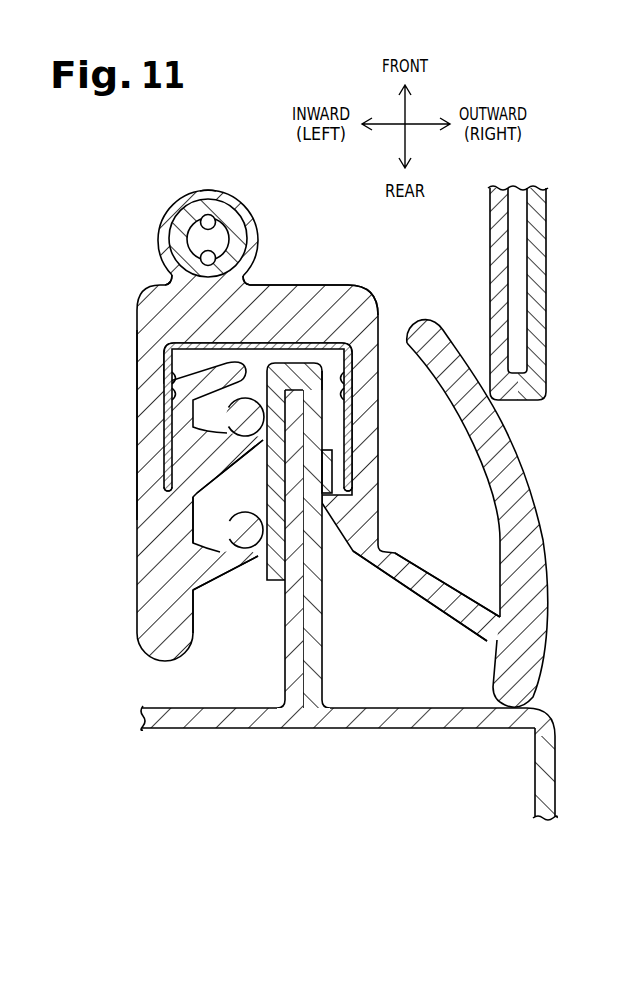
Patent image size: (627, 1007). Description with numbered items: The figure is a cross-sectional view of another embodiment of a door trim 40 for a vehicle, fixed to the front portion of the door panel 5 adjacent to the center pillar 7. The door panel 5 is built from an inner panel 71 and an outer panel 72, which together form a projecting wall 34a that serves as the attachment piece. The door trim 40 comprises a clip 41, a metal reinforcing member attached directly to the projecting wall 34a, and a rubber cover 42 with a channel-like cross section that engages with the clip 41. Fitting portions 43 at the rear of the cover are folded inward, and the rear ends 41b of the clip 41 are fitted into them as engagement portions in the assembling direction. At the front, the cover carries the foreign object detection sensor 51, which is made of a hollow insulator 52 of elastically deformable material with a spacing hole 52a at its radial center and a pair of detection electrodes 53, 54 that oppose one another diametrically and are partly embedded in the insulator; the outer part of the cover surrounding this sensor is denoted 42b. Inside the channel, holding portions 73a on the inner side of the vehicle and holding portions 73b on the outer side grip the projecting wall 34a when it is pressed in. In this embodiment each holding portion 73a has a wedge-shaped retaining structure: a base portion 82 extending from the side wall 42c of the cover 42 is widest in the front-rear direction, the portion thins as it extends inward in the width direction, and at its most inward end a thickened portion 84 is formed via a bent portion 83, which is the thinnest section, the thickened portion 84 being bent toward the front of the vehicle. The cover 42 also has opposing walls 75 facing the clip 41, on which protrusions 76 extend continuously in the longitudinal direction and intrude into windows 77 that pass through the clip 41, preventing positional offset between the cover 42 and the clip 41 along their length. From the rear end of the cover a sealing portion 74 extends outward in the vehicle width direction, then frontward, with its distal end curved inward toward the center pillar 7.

The door panel 5 is at (556, 792).
The center pillar 7 is at (548, 298).
The projecting wall 34a is at (300, 577).
The door trim 40 is at (125, 350).
The clip 41 is at (352, 318).
The rear ends 41b is at (175, 500).
The cover 42 is at (137, 434).
The tubular portion 42b is at (243, 196).
The side wall 42c is at (160, 566).
The fitting portions 43 is at (166, 488).
The foreign object detection sensor 51 is at (246, 222).
The hollow insulator 52 is at (184, 222).
The spacing hole 52a is at (228, 245).
The detection electrode 53 is at (208, 190).
The detection electrode 54 is at (170, 268).
The inner panel 71 is at (183, 728).
The outer panel 72 is at (417, 728).
The holding portions 73a is at (235, 465).
The holding portions 73b is at (335, 430).
The sealing portion 74 is at (537, 474).
The opposing walls 75 is at (138, 406).
The protrusions 76 is at (168, 394).
The windows 77 is at (174, 378).
The base portion 82 is at (163, 453).
The bent portion 83 is at (253, 448).
The thickened portion 84 is at (234, 408).